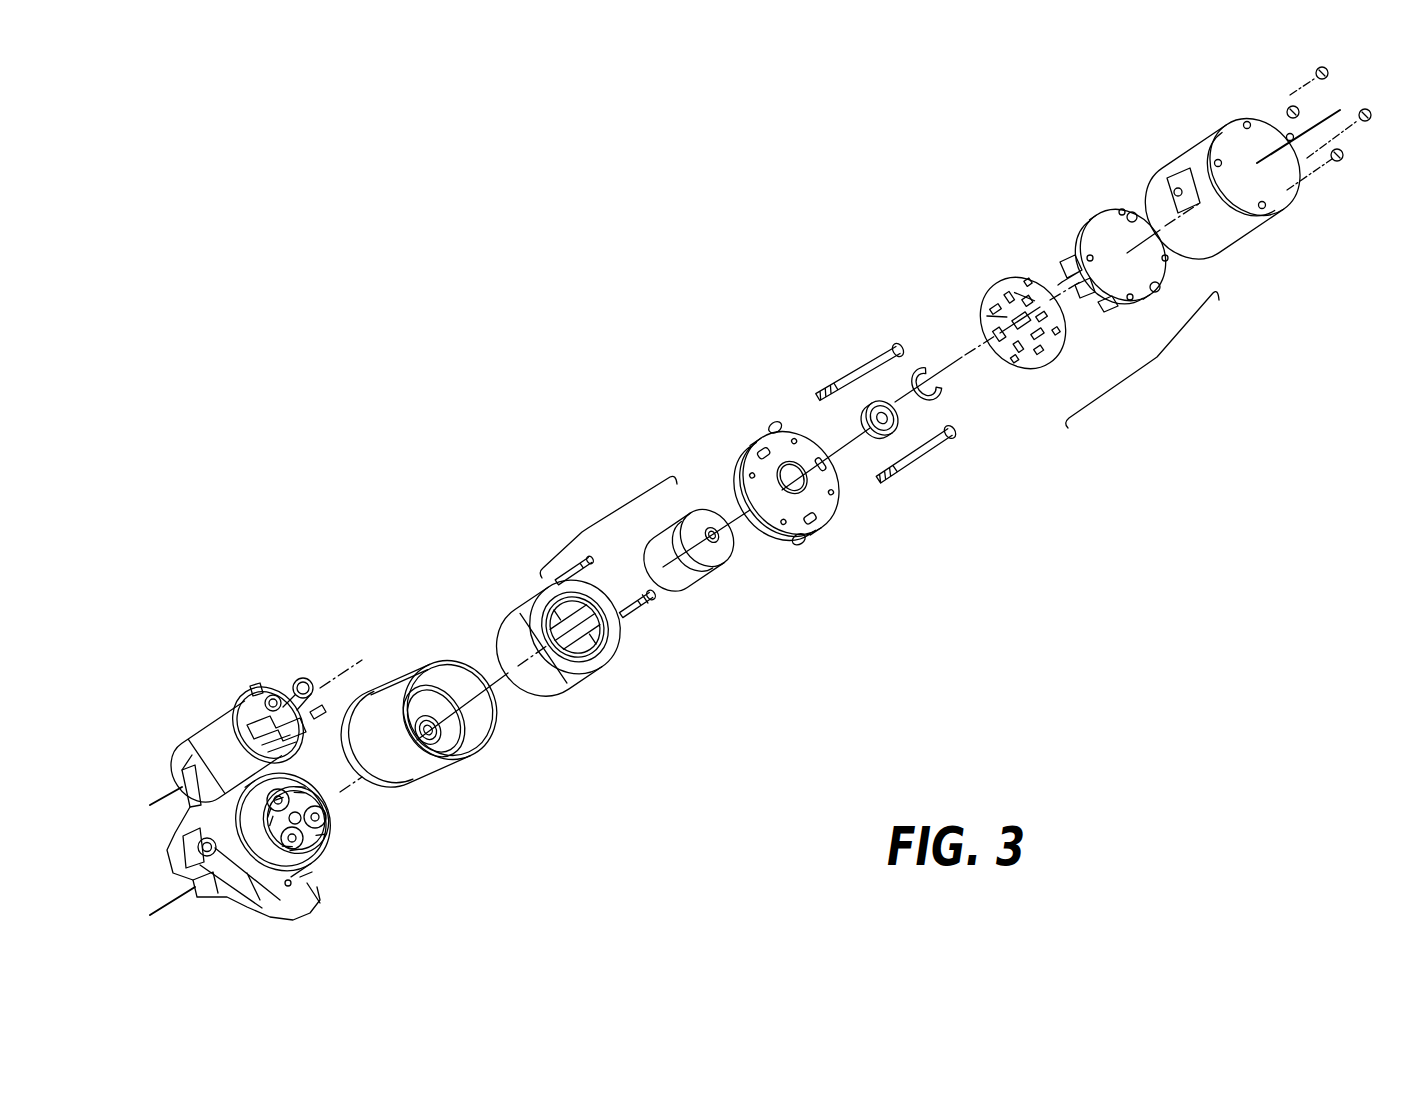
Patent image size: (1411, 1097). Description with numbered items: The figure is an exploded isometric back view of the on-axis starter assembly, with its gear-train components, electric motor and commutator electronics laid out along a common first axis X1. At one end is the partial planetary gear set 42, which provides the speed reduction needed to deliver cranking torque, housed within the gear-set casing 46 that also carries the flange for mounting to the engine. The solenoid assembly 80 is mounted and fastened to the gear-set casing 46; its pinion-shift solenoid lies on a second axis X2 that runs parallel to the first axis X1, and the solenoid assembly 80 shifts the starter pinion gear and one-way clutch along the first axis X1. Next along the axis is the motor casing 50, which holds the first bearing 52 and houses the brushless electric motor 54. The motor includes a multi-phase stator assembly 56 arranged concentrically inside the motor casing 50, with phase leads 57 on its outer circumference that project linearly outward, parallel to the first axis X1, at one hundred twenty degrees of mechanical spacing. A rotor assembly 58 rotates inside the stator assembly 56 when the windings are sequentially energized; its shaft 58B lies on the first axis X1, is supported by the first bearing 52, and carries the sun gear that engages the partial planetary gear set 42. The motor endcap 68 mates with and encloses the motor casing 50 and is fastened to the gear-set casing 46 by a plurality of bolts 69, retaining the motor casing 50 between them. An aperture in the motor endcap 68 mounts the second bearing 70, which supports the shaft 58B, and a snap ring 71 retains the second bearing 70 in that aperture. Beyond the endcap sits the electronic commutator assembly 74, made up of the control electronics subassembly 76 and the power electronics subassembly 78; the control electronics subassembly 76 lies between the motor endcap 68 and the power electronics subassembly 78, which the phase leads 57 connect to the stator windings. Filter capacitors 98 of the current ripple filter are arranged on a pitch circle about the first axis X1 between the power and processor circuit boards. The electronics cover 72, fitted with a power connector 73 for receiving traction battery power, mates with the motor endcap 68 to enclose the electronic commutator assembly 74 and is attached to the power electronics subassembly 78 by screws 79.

The partial planetary gear set 42 is at (338, 840).
The gear-set casing 46 is at (315, 897).
The motor casing 50 is at (458, 785).
The first bearing 52 is at (428, 730).
The brushless electric motor 54 is at (583, 528).
The multi-phase stator assembly 56 is at (513, 602).
The phase leads 57 is at (627, 615).
The rotor assembly 58 is at (705, 595).
The shaft 58B is at (716, 535).
The motor endcap 68 is at (830, 502).
The bolts 69 is at (858, 375).
The second bearing 70 is at (893, 435).
The snap ring 71 is at (924, 370).
The electronics cover 72 is at (1224, 122).
The power connector 73 is at (1172, 183).
The electronic commutator assembly 74 is at (1152, 361).
The control electronics subassembly 76 is at (1055, 378).
The power electronics subassembly 78 is at (1085, 213).
The screws 79 is at (1340, 162).
The solenoid assembly 80 is at (222, 704).
The filter capacitors 98 is at (1095, 302).
The first axis X1 is at (340, 793).
The second axis X2 is at (345, 670).